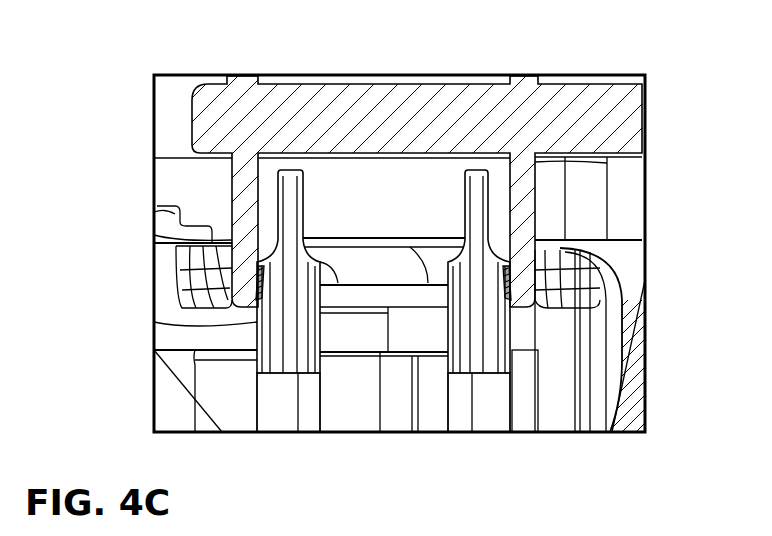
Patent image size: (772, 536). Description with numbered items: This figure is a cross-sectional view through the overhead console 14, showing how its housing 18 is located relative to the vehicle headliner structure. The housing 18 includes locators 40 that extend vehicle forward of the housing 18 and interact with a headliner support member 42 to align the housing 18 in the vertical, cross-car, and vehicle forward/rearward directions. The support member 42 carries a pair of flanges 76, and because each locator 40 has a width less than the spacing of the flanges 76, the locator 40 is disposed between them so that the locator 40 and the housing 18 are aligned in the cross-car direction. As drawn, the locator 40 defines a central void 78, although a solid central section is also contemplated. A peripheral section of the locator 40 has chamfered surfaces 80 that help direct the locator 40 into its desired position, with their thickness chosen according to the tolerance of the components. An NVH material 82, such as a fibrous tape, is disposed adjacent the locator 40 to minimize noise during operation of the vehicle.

The overhead console 14 is at (482, 405).
The housing 18 is at (595, 292).
The locator 40 is at (325, 258).
The headliner support member 42 is at (348, 113).
The flanges 76 is at (242, 228).
The central void 78 is at (384, 210).
The chamfered surfaces 80 is at (260, 310).
The NVH material 82 is at (258, 276).